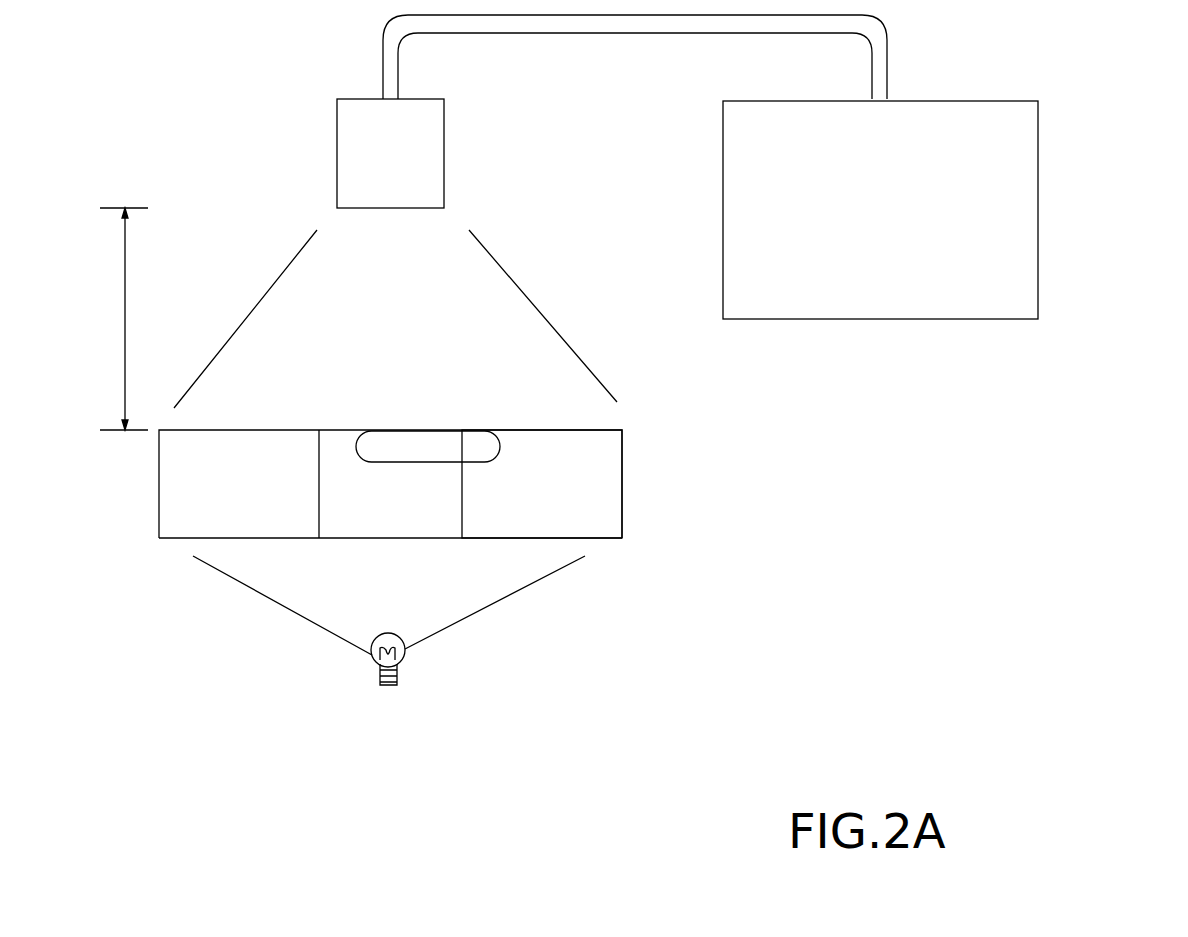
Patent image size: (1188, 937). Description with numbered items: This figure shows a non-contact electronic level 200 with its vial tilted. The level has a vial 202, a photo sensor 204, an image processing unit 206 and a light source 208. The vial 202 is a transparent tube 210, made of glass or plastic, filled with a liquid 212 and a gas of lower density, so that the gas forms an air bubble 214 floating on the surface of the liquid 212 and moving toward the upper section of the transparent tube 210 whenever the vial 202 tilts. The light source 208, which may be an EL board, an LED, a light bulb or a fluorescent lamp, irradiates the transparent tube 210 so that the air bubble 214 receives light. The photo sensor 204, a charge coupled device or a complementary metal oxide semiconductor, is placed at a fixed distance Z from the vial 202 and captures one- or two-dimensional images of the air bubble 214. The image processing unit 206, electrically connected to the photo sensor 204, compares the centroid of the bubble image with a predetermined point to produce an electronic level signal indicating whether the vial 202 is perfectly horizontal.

The non-contact electronic level 200 is at (622, 675).
The vial 202 is at (818, 445).
The photo sensor 204 is at (364, 142).
The image processing unit 206 is at (965, 217).
The light source 208 is at (373, 658).
The transparent tube 210 is at (622, 505).
The liquid 212 is at (587, 531).
The air bubble 214 is at (488, 450).